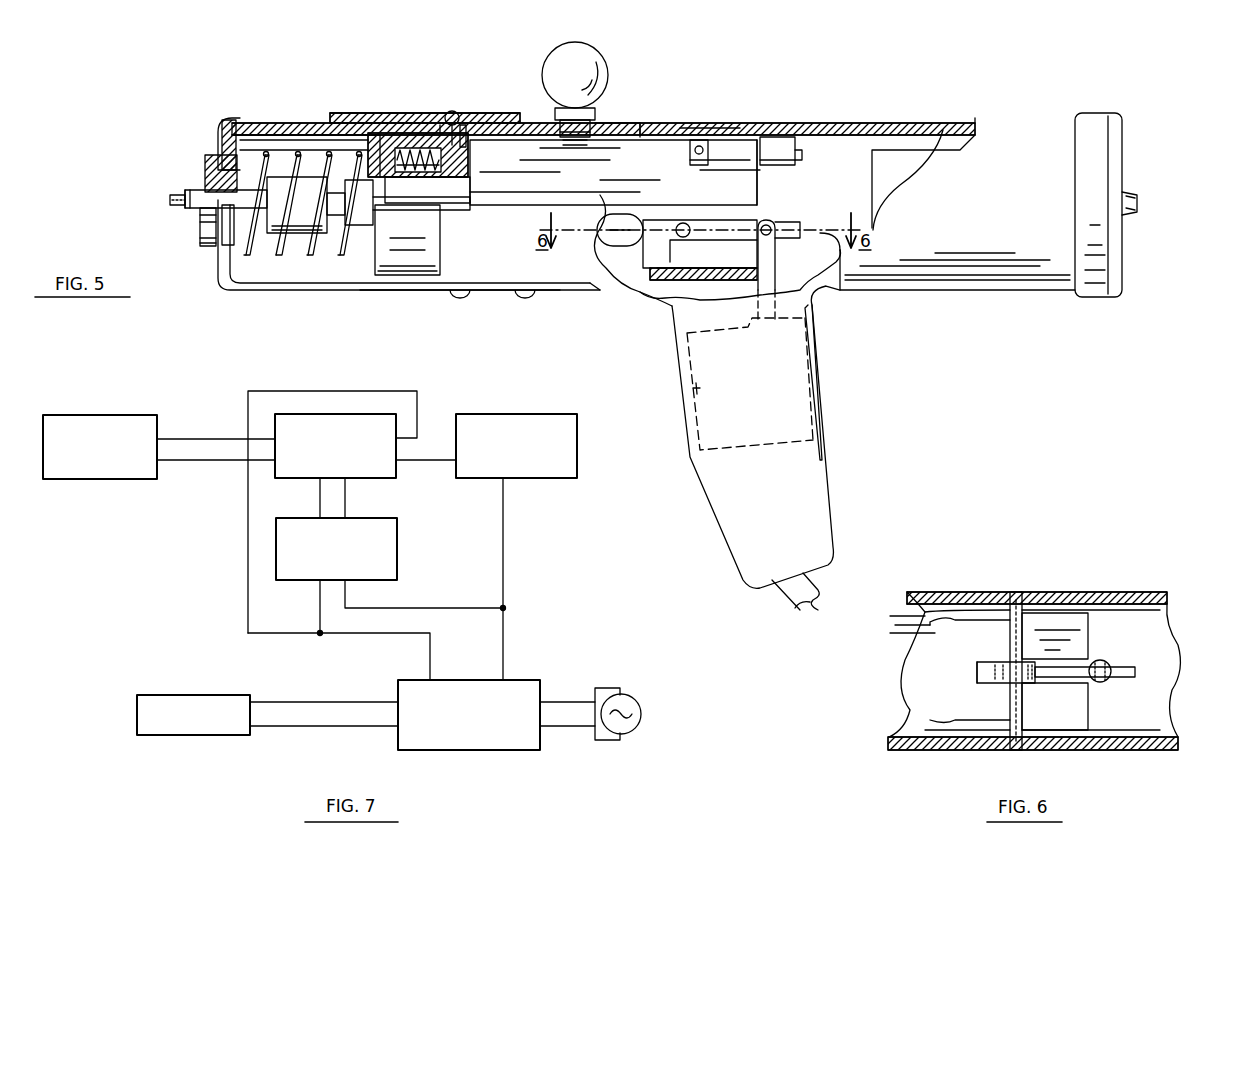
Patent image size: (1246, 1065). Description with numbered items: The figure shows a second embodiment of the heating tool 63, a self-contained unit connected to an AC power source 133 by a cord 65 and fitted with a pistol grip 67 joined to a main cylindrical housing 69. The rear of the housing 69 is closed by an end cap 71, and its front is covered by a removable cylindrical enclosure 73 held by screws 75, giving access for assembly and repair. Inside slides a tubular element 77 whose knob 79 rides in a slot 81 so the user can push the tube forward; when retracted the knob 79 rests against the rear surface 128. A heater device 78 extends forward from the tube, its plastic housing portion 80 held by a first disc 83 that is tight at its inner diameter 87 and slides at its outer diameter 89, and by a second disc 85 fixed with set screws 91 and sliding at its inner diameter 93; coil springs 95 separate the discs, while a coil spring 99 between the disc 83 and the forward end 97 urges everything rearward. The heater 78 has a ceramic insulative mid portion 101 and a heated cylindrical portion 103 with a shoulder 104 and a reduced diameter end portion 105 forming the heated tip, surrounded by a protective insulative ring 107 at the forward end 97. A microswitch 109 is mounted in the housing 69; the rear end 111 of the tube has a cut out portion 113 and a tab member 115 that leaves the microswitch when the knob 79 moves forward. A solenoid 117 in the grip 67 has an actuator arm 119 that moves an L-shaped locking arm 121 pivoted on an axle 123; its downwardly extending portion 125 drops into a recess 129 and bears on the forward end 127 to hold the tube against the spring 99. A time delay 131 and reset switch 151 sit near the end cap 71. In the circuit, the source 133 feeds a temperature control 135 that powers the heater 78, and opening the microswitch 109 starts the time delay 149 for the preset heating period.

In FIG. 5, the tool 63 is at (706, 97).
In FIG. 5, the cord 65 is at (818, 597).
In FIG. 7, the cord 65 is at (572, 700).
In FIG. 5, the pistol grip 67 is at (822, 393).
In FIG. 5, the main cylindrical housing 69 is at (762, 132).
In FIG. 6, the main cylindrical housing 69 is at (973, 592).
In FIG. 5, the end cap 71 is at (1105, 170).
In FIG. 5, the removable cylindrical enclosure 73 is at (305, 120).
In FIG. 5, the screws 75 is at (452, 110).
In FIG. 5, the tubular element 77 is at (437, 128).
In FIG. 6, the tubular element 77 is at (905, 750).
In FIG. 5, the heater device 78 is at (285, 140).
In FIG. 7, the heater device 78 is at (218, 695).
In FIG. 5, the knob 79 is at (580, 55).
In FIG. 5, the portion 80 is at (358, 240).
In FIG. 5, the slot 81 is at (612, 128).
In FIG. 5, the first disc 83 is at (395, 145).
In FIG. 5, the second disc 85 is at (465, 125).
In FIG. 5, the inner diameter 87 is at (385, 205).
In FIG. 5, the outer diameter 89 is at (415, 150).
In FIG. 5, the set screws 91 is at (490, 120).
In FIG. 5, the inner diameter 93 is at (475, 166).
In FIG. 5, the coil springs 95 is at (412, 172).
In FIG. 5, the forward end 97 is at (220, 135).
In FIG. 5, the coil spring 99 is at (275, 258).
In FIG. 5, the ceramic insulative mid portion 101 is at (305, 185).
In FIG. 5, the heated cylindrical portion 103 is at (190, 224).
In FIG. 5, the shoulder 104 is at (185, 195).
In FIG. 5, the reduced diameter end portion 105 is at (170, 198).
In FIG. 5, the protective insulative ring 107 is at (205, 172).
In FIG. 5, the microswitch 109 is at (790, 137).
In FIG. 7, the microswitch 109 is at (397, 565).
In FIG. 5, the rear end 111 is at (762, 170).
In FIG. 6, the rear end 111 is at (1088, 642).
In FIG. 5, the cut out portion 113 is at (712, 130).
In FIG. 5, the tab member 115 is at (690, 160).
In FIG. 5, the solenoid 117 is at (680, 428).
In FIG. 7, the solenoid 117 is at (545, 468).
In FIG. 5, the actuator arm 119 is at (770, 255).
In FIG. 6, the actuator arm 119 is at (1110, 682).
In FIG. 5, the locking arm 121 is at (786, 226).
In FIG. 6, the locking arm 121 is at (1132, 660).
In FIG. 5, the axle 123 is at (686, 222).
In FIG. 6, the axle 123 is at (1020, 608).
In FIG. 5, the downwardly extending portion 125 is at (640, 225).
In FIG. 6, the downwardly extending portion 125 is at (975, 668).
In FIG. 6, the forward end 127 is at (977, 684).
In FIG. 5, the rear surface 128 is at (640, 135).
In FIG. 6, the recess 129 is at (1040, 685).
In FIG. 5, the time delay 131 is at (943, 130).
In FIG. 7, the AC power source 133 is at (641, 712).
In FIG. 7, the temperature control 135 is at (518, 690).
In FIG. 7, the time delay 149 is at (396, 468).
In FIG. 7, the reset switch 151 is at (125, 415).